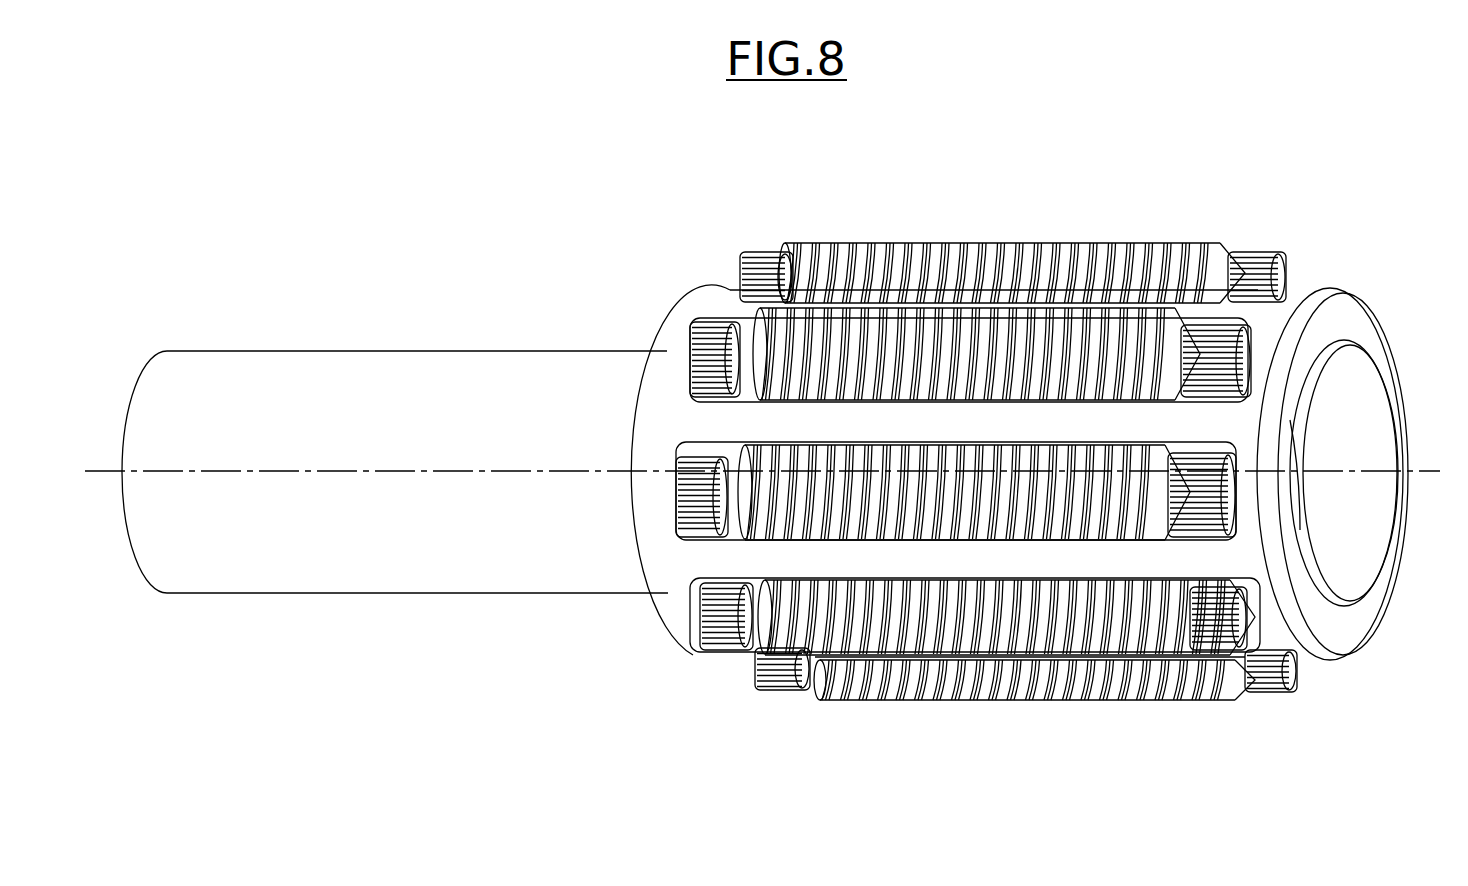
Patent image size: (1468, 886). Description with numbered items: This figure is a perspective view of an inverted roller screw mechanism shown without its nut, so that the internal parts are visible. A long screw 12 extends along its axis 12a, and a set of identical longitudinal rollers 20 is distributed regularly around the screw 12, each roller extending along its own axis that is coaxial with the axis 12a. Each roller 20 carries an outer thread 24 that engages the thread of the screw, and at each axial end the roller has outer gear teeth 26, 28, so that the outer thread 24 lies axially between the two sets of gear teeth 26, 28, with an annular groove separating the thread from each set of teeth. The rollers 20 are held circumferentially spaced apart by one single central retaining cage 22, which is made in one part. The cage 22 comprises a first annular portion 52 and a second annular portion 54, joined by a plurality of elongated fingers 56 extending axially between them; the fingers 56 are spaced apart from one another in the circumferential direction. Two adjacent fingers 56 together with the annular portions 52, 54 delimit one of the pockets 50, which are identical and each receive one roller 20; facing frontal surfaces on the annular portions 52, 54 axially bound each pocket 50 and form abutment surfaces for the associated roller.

The screw 12 is at (418, 350).
The axis 12a is at (1425, 468).
The rollers 20 is at (1142, 246).
The central retaining cage 22 is at (1327, 662).
The outer thread 24 is at (968, 248).
The outer gear teeth 26 is at (765, 252).
The outer gear teeth 28 is at (1255, 252).
The pockets 50 is at (1220, 510).
The first annular portion 52 is at (688, 655).
The second annular portion 54 is at (1263, 694).
The fingers 56 is at (1040, 425).